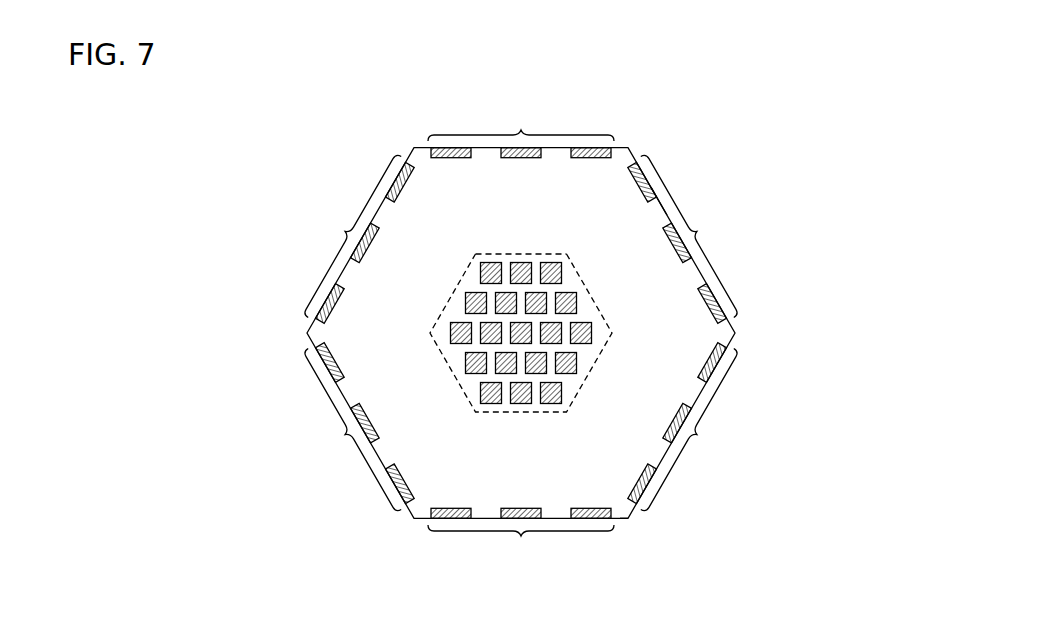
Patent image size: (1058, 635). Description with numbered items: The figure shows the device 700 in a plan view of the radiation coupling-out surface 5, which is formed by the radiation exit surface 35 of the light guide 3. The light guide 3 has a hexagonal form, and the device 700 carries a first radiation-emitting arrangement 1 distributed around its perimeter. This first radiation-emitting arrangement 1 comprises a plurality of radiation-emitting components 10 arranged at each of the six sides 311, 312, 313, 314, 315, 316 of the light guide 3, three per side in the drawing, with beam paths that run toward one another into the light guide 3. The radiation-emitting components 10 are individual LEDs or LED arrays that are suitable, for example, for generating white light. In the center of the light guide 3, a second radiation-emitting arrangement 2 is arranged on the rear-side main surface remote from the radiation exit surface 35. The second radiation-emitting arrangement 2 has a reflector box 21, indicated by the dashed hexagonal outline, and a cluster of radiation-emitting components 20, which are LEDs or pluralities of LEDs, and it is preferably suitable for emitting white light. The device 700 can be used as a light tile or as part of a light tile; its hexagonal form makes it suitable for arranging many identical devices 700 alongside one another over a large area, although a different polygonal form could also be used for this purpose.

The device 700 is at (371, 90).
The first radiation-emitting arrangement 1 is at (525, 123).
The second radiation-emitting arrangement 2 is at (590, 313).
The light guide 3 is at (630, 519).
The radiation coupling-out surface 5 is at (606, 196).
The radiation-emitting component 10 is at (380, 236).
The radiation-emitting component 20 is at (493, 402).
The reflector box 21 is at (508, 253).
The radiation exit surface 35 is at (645, 232).
The side 311 is at (487, 520).
The side 312 is at (663, 452).
The side 313 is at (660, 199).
The side 314 is at (484, 148).
The side 315 is at (333, 262).
The side 316 is at (343, 403).